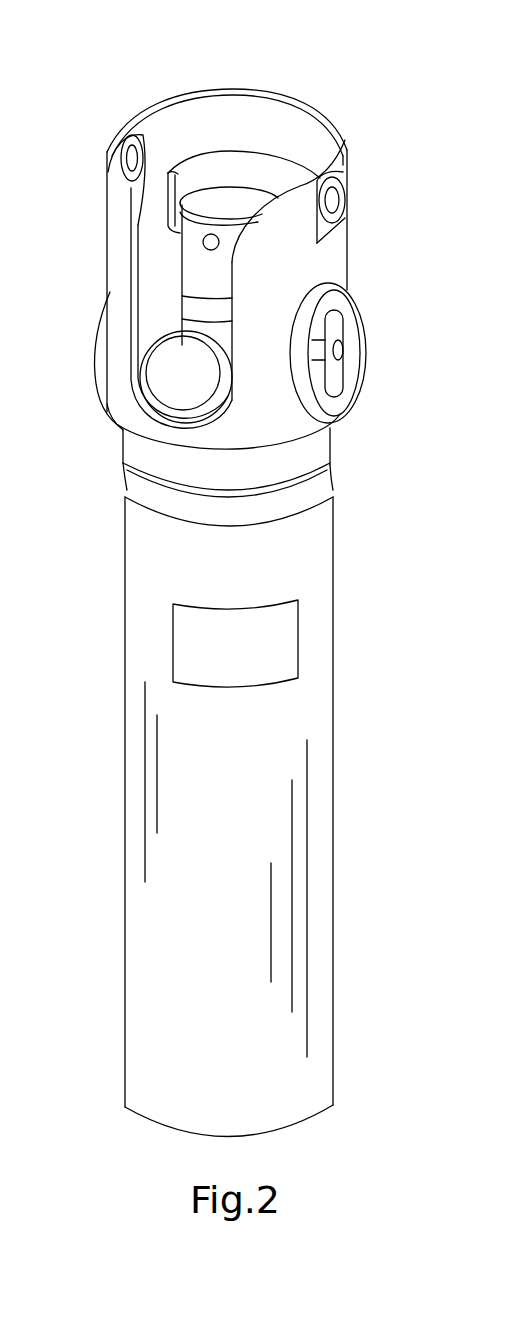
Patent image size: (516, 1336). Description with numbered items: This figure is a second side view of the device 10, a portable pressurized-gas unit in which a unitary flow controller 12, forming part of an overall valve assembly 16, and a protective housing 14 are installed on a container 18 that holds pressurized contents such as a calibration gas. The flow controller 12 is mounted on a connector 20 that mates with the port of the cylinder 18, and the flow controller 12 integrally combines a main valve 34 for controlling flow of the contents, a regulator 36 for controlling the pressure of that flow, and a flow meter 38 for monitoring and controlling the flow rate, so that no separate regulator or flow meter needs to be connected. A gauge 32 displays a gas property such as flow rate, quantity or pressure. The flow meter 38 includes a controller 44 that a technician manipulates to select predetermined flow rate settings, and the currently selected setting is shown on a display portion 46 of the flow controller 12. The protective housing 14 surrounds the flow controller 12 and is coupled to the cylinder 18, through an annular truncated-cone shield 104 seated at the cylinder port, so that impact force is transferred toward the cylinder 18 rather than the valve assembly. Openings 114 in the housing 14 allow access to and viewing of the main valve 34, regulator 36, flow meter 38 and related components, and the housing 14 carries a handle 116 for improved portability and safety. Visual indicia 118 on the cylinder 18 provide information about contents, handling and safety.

The device 10 is at (98, 48).
The flow controller 12 is at (191, 282).
The protective housing 14 is at (160, 127).
The valve assembly 16 is at (263, 163).
The container 18 is at (150, 622).
The connector 20 is at (180, 318).
The gauge 32 is at (200, 397).
The main valve 34 is at (335, 320).
The regulator 36 is at (220, 308).
The flow meter 38 is at (187, 252).
The controller 44 is at (223, 197).
The display portion 46 is at (219, 242).
The shield 104 is at (320, 470).
The openings 114 is at (236, 158).
The handle 116 is at (320, 150).
The visual indicia 118 is at (282, 637).